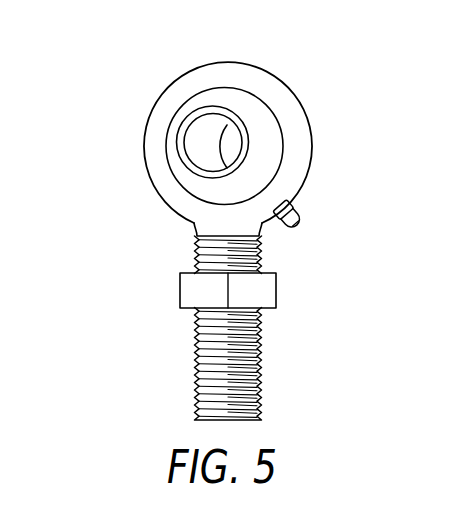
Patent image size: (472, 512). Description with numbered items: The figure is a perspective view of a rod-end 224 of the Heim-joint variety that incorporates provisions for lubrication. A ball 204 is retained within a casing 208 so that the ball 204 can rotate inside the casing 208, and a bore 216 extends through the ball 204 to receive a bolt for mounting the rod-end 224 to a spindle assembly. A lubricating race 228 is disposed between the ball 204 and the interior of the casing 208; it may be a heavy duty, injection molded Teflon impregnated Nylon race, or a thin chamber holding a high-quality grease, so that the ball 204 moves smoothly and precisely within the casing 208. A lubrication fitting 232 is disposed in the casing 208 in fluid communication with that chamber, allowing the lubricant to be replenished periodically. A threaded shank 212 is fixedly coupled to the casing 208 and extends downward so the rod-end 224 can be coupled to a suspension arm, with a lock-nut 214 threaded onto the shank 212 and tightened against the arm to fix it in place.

The rod-end 224 is at (135, 65).
The casing 208 is at (270, 83).
The bore 216 is at (195, 136).
The ball 204 is at (244, 149).
The lubricating race 228 is at (179, 172).
The lubrication fitting 232 is at (298, 226).
The lock-nut 214 is at (192, 289).
The threaded shank 212 is at (262, 368).